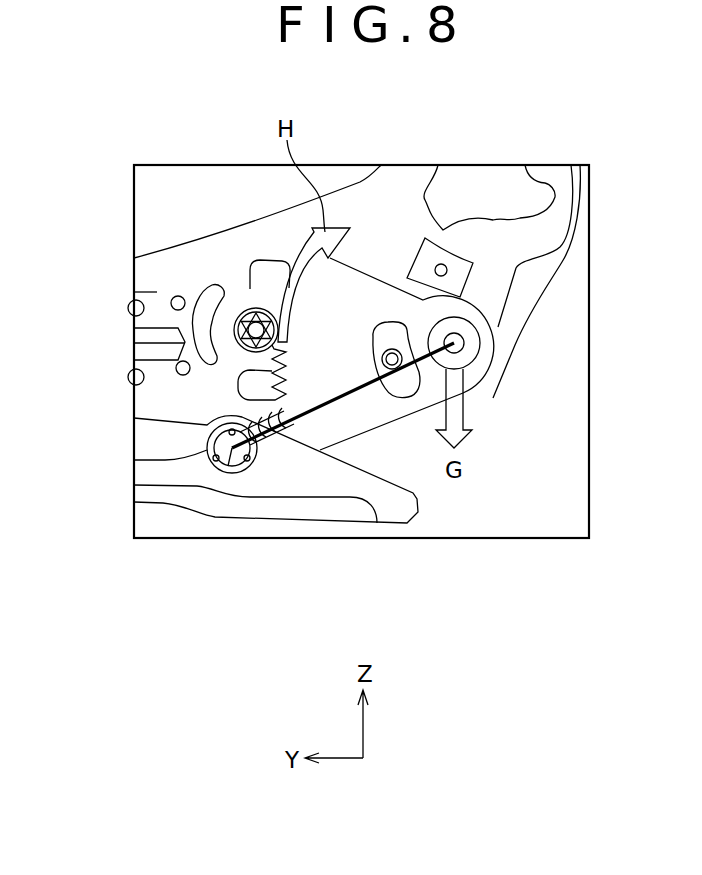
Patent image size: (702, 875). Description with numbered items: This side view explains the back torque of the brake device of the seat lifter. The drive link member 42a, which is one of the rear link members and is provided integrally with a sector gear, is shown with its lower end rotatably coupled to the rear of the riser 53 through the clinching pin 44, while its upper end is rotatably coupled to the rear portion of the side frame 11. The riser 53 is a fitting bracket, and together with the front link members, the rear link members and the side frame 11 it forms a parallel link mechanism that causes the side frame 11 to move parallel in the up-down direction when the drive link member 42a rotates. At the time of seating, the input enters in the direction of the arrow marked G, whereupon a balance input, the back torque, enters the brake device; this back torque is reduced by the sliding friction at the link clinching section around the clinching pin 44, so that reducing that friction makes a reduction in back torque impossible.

The side frame 11 is at (155, 292).
The clinching pin 44 is at (207, 452).
The riser 53 is at (293, 477).
The drive link member 42a is at (378, 415).